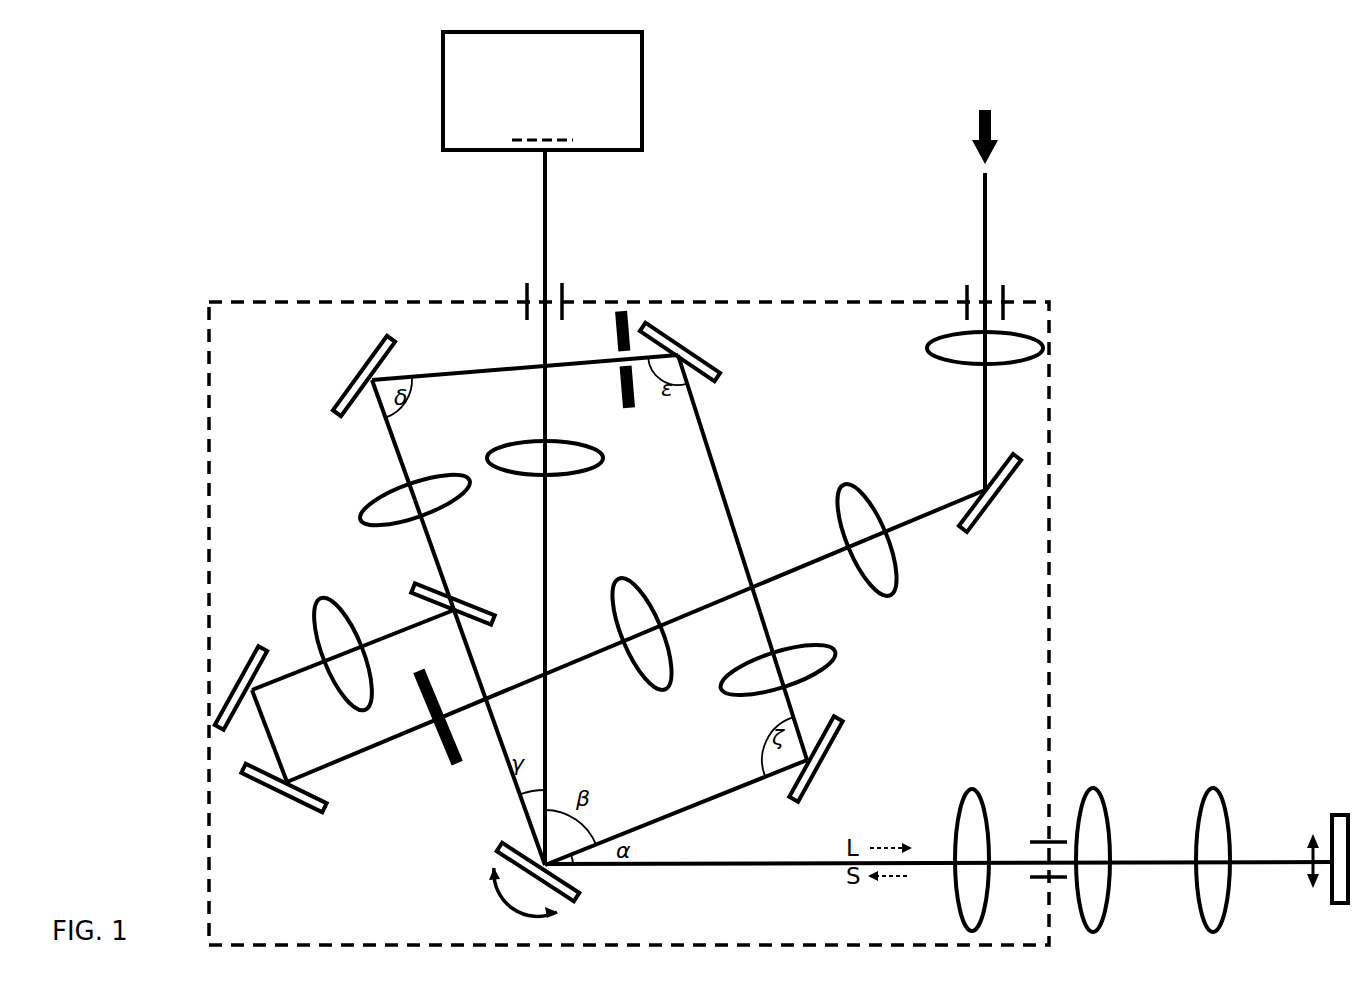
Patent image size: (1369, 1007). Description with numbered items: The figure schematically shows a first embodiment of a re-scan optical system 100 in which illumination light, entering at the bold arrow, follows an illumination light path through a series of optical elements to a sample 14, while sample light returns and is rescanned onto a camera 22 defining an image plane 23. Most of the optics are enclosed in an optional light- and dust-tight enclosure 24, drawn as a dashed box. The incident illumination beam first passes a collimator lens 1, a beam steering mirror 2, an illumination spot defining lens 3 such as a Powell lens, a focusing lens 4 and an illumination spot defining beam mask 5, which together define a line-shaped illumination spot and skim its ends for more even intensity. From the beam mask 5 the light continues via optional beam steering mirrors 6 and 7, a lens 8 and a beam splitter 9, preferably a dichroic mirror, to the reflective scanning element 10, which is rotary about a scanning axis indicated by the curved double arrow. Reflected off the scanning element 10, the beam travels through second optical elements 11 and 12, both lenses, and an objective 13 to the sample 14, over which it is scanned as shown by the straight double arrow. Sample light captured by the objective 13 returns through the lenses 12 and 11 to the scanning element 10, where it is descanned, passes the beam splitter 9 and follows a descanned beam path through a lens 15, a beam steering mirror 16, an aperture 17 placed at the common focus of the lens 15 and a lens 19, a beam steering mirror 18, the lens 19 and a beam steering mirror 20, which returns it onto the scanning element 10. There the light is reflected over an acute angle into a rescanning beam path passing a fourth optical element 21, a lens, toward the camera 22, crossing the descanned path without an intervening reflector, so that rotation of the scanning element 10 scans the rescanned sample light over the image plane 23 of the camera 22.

The collimator lens 1 is at (942, 347).
The beam steering mirror 2 is at (1007, 475).
The illumination spot defining lens 3 is at (873, 573).
The focusing lens 4 is at (630, 617).
The illumination spot defining beam mask 5 is at (462, 766).
The beam steering mirror 6 is at (258, 778).
The beam steering mirror 7 is at (250, 673).
The lens 8 is at (335, 625).
The beam splitter 9 is at (478, 595).
The scanning element 10 is at (500, 845).
The second optical element 11 is at (978, 815).
The second optical element 12 is at (1100, 815).
The objective 13 is at (1220, 815).
The sample 14 is at (1340, 825).
The lens 15 is at (393, 507).
The beam steering mirror 16 is at (378, 338).
The aperture 17 is at (627, 408).
The beam steering mirror 18 is at (728, 352).
The lens 19 is at (818, 652).
The beam steering mirror 20 is at (800, 797).
The fourth optical element 21 is at (520, 457).
The camera 22 is at (460, 88).
The image plane 23 is at (560, 142).
The light- and dust-tight enclosure 24 is at (1050, 436).
The re-scan optical system 100 is at (1082, 243).